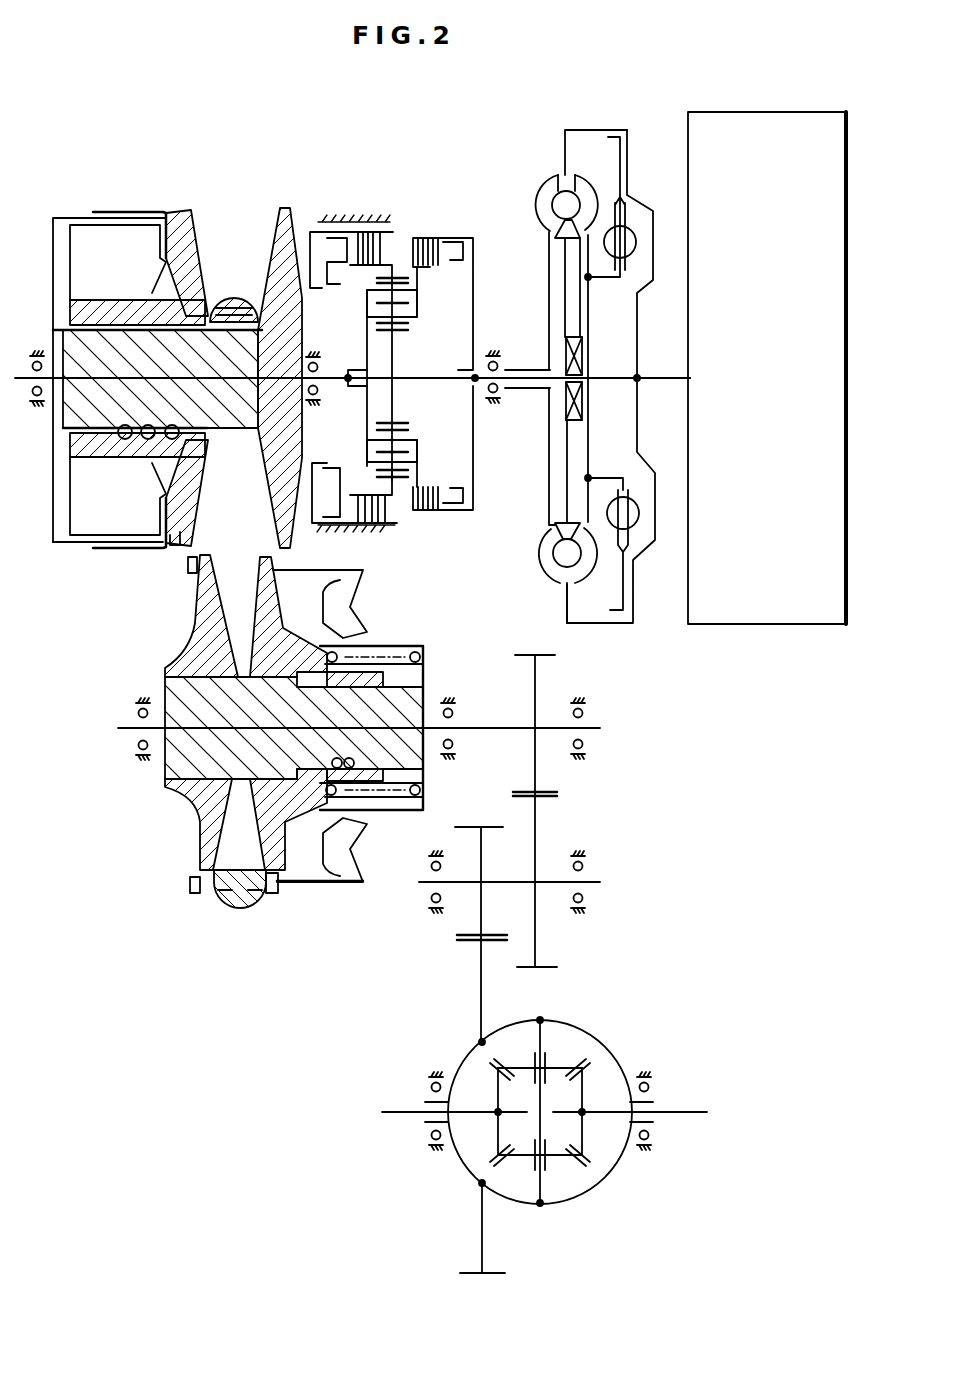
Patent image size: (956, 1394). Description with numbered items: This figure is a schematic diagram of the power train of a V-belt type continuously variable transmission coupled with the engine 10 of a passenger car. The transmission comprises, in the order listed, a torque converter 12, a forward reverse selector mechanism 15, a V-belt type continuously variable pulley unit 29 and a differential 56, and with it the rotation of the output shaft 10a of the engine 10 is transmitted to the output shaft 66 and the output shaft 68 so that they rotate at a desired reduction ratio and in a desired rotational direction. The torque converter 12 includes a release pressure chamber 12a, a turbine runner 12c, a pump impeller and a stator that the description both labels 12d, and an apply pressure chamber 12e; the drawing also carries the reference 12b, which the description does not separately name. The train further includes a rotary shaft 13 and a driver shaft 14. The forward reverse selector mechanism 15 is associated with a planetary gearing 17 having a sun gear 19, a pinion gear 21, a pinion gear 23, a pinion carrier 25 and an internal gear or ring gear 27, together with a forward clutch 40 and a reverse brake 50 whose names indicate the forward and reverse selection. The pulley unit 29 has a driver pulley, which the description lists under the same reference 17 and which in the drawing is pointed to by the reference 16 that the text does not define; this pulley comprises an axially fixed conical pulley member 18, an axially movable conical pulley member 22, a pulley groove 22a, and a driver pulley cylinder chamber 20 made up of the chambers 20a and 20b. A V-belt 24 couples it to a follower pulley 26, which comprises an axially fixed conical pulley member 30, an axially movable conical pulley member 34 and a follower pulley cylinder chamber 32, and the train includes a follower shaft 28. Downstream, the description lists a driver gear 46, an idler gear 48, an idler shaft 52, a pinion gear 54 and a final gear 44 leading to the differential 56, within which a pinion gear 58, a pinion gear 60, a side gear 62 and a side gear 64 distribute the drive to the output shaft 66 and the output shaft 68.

The engine 10 is at (770, 112).
The output shaft 10a is at (665, 379).
The torque converter 12 is at (584, 360).
The release pressure chamber 12a is at (627, 452).
The lower pump 12b is at (540, 557).
The turbine runner 12c is at (586, 575).
The stator 12d is at (555, 520).
The apply pressure chamber 12e is at (549, 283).
The rotary shaft 13 is at (520, 379).
The driver shaft 14 is at (337, 380).
The forward reverse selector mechanism 15 is at (421, 344).
The electromagnetic clutch 16 is at (202, 350).
The planetary gearing 17 is at (438, 305).
The axially fixed conical pulley member 18 is at (288, 212).
The sun gear 19 is at (396, 395).
The driver pulley cylinder chamber 20 is at (93, 248).
The chamber 20a is at (60, 542).
The chamber 20b is at (155, 215).
The pinion gear 21 is at (403, 432).
The axially movable conical pulley member 22 is at (187, 213).
The pulley groove 22a is at (206, 248).
The pinion gear 23 is at (404, 470).
The V-belt 24 is at (207, 540).
The pinion carrier 25 is at (368, 432).
The follower pulley 26 is at (222, 910).
The internal gear or ring gear 27 is at (403, 480).
The follower shaft 28 is at (495, 729).
The V-belt type continuously variable pulley unit 29 is at (253, 775).
The axially fixed conical pulley member 30 is at (195, 825).
The follower pulley cylinder chamber 32 is at (303, 866).
The axially movable conical pulley member 34 is at (272, 882).
The forward clutch 40 is at (442, 238).
The final gear 44 is at (490, 1273).
The driver gear 46 is at (530, 655).
The idler gear 48 is at (537, 925).
The reverse brake 50 is at (393, 232).
The idler shaft 52 is at (552, 880).
The pinion gear 54 is at (480, 912).
The differential 56 is at (565, 1111).
The pinion gear 58 is at (565, 1160).
The pinion gear 60 is at (518, 1068).
The side gear 62 is at (497, 1135).
The side gear 64 is at (583, 1088).
The output shaft 66 is at (393, 1113).
The output shaft 68 is at (703, 1113).